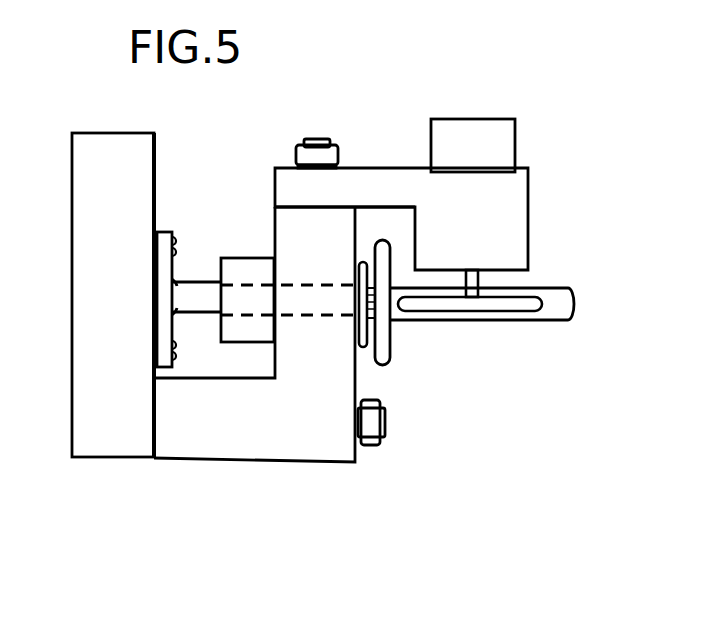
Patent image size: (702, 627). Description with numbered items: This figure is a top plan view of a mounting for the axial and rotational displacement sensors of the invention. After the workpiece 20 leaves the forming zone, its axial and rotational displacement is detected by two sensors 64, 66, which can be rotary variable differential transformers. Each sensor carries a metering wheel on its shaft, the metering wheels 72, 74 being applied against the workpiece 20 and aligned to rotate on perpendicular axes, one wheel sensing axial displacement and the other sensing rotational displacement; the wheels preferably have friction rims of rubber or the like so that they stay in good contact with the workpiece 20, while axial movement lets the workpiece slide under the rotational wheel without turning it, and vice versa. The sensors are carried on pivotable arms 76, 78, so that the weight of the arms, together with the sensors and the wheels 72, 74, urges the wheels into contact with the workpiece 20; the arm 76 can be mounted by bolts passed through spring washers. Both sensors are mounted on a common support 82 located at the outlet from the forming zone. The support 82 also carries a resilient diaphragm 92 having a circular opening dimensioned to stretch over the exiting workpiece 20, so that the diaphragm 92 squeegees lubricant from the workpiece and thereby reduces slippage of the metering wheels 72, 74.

The workpiece 20 is at (560, 290).
The sensor 64 is at (522, 159).
The sensor 66 is at (359, 326).
The metering wheel 72 is at (438, 305).
The metering wheel 74 is at (393, 251).
The pivotable arm 76 is at (280, 363).
The pivotable arm 78 is at (290, 188).
The common support 82 is at (82, 291).
The resilient diaphragm 92 is at (171, 283).